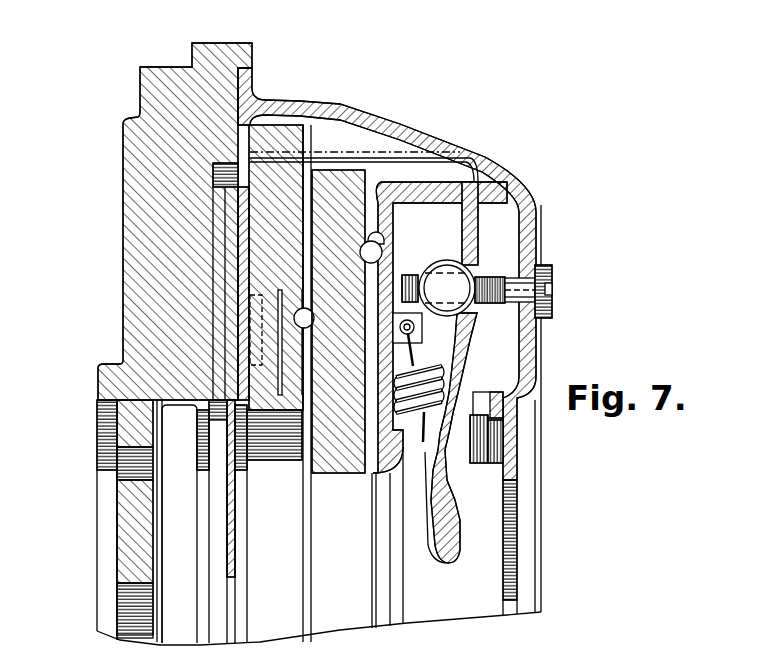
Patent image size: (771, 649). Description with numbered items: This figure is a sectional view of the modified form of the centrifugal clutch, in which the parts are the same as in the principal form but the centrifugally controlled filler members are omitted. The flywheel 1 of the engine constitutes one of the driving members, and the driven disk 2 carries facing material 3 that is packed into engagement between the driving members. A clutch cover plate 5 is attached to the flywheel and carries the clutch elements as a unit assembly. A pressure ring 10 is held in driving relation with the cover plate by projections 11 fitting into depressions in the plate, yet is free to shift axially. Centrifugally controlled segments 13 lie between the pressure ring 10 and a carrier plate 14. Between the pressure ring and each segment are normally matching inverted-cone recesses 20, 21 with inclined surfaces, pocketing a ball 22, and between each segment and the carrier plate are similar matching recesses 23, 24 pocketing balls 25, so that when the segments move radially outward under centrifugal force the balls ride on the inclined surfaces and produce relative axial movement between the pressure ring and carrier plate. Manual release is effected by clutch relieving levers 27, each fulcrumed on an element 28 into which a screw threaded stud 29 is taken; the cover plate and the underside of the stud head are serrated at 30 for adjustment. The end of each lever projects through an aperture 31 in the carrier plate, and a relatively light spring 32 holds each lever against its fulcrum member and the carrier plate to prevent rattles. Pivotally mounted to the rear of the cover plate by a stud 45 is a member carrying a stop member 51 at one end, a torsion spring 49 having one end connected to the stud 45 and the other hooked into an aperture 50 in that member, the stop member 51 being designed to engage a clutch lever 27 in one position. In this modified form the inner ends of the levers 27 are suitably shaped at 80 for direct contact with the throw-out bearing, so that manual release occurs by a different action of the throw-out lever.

The flywheel 1 is at (224, 53).
The driven disk 2 is at (227, 515).
The facing material 3 is at (245, 217).
The clutch cover plate 5 is at (432, 152).
The pressure ring 10 is at (325, 145).
The projections 11 is at (290, 125).
The segments 13 is at (340, 473).
The carrier plate 14 is at (405, 572).
The recess 20 is at (310, 367).
The recess 21 is at (320, 270).
The ball 22 is at (297, 317).
The recess 23 is at (380, 253).
The recess 24 is at (380, 236).
The ball 25 is at (375, 225).
The clutch relieving lever 27 is at (468, 350).
The fulcrum element 28 is at (455, 283).
The screw threaded stud 29 is at (553, 292).
The serrations 30 is at (542, 283).
The aperture 31 is at (478, 183).
The spring 32 is at (413, 415).
The stud 45 is at (520, 462).
The torsion spring 49 is at (473, 464).
The aperture 50 is at (503, 436).
The stop member 51 is at (480, 393).
The shaped lever end 80 is at (459, 551).